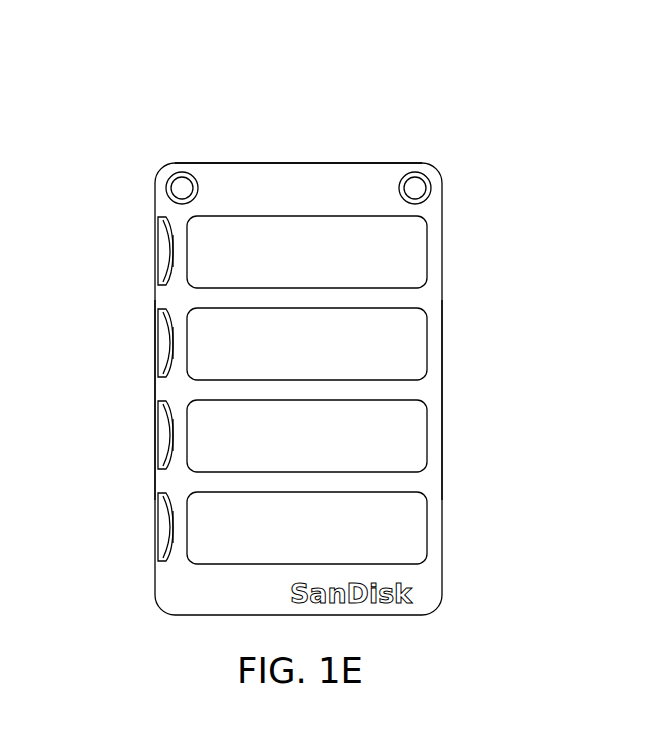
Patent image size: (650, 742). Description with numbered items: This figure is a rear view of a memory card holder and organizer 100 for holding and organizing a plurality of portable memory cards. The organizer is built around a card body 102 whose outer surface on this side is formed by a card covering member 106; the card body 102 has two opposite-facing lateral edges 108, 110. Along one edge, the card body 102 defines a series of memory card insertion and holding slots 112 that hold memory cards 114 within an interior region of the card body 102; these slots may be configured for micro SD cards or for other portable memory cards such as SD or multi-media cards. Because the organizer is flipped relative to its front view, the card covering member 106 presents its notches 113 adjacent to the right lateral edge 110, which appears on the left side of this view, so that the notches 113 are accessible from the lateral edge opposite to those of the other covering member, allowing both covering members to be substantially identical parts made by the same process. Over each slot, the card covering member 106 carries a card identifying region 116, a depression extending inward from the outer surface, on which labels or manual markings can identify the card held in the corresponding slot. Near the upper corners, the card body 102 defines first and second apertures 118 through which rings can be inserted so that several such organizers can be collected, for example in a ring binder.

The memory card holder and organizer 100 is at (190, 92).
The card body 102 is at (438, 249).
The second card covering member 106 is at (315, 187).
The lateral edge 108 is at (440, 390).
The lateral edge 110 is at (155, 393).
The memory card insertion and holding slots 112 is at (157, 218).
The notches 113 is at (174, 259).
The memory cards 114 is at (158, 250).
The card identifying regions 116 is at (378, 271).
The apertures 118 is at (183, 185).